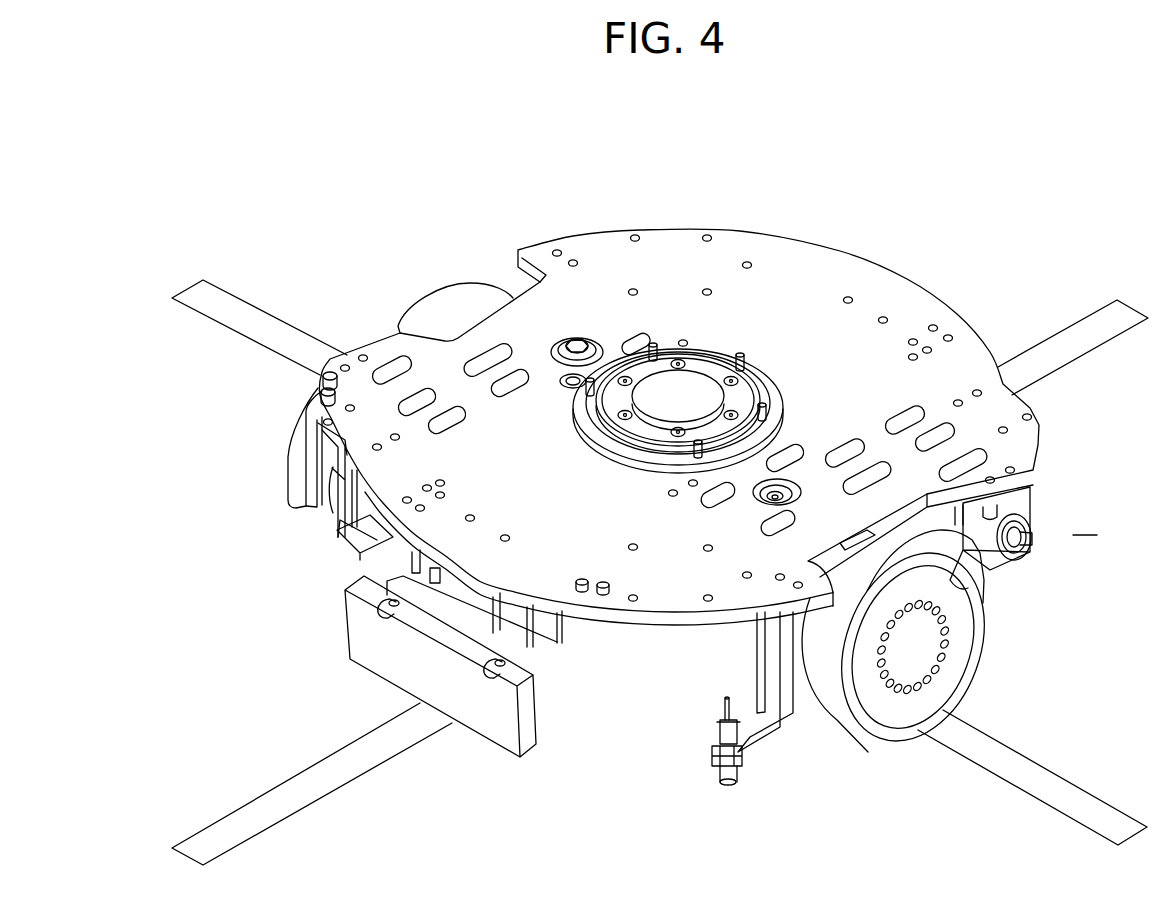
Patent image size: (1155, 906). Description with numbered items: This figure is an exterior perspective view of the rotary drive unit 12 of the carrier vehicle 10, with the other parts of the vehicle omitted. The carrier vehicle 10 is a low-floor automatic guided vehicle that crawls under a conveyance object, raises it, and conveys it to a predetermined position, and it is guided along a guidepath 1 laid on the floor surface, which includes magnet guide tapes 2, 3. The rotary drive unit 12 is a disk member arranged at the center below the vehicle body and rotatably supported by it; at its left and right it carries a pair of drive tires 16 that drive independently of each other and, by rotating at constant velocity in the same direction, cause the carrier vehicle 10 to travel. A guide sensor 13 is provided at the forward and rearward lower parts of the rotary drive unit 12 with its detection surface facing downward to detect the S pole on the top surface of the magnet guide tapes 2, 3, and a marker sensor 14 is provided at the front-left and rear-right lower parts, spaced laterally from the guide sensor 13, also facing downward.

The guidepath 1 is at (660, 467).
The magnet guide tape 2 is at (1058, 330).
The magnet guide tape 3 is at (263, 301).
The carrier vehicle 10 is at (663, 401).
The rotary drive unit 12 is at (567, 238).
The guide sensor 13 is at (520, 762).
The marker sensor 14 is at (727, 786).
The drive tire 16 is at (446, 283).